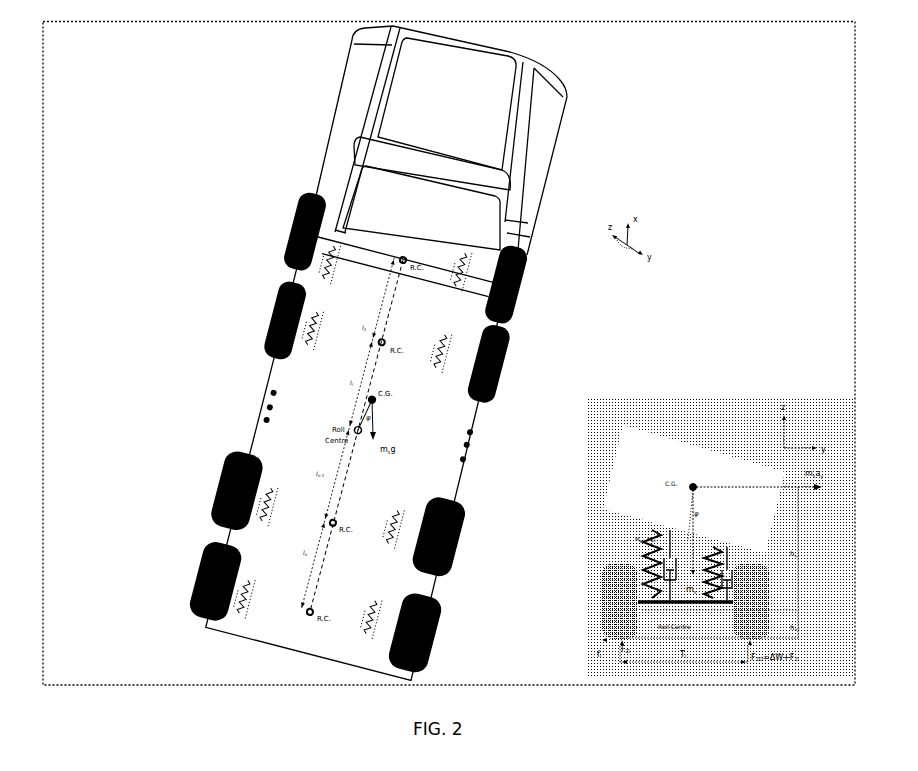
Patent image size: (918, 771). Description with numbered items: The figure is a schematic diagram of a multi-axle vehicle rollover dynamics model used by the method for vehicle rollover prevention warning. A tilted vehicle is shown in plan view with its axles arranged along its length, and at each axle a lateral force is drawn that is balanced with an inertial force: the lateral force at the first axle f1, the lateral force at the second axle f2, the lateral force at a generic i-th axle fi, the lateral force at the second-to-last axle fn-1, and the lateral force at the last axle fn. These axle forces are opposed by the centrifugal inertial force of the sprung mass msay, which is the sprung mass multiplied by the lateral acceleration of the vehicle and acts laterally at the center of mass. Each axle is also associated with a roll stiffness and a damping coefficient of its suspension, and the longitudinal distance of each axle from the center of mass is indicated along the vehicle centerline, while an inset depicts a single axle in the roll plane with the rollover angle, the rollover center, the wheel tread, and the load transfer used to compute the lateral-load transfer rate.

The lateral force at the first axle f1 is at (285, 232).
The lateral force at the second axle f2 is at (265, 318).
The lateral force at the i-th axle fi is at (248, 403).
The lateral force at the (n-1)-th axle fn-1 is at (220, 488).
The lateral force at the n-th axle fn is at (197, 573).
The centrifugal inertial force of the sprung mass msay is at (372, 400).